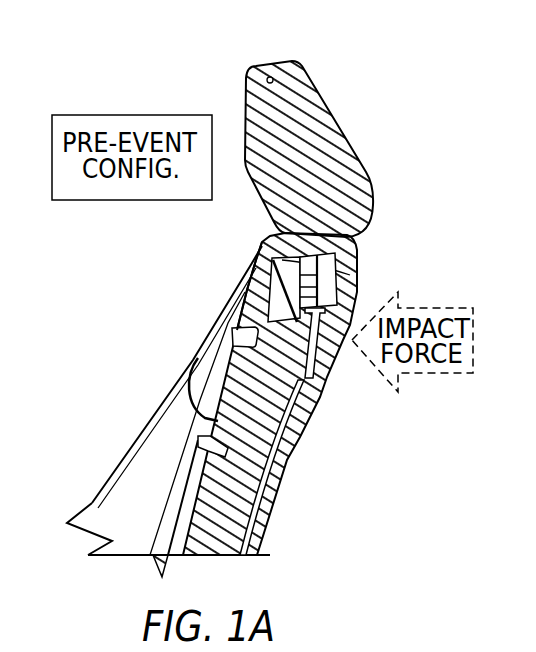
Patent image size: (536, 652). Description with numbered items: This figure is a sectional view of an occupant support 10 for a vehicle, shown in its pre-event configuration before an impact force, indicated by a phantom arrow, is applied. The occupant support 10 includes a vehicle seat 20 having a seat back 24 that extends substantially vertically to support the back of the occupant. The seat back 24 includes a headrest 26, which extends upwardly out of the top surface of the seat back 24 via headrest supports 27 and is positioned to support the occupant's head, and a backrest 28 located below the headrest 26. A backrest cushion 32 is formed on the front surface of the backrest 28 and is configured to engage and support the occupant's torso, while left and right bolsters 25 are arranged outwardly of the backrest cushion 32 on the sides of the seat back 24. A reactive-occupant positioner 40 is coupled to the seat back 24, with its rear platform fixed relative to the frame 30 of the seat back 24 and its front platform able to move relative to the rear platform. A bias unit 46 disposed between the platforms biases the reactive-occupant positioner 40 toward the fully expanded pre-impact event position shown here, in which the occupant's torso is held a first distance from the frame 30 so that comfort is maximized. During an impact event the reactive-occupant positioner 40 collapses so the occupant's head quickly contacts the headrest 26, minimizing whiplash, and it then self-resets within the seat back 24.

The occupant support 10 is at (360, 67).
The vehicle seat 20 is at (385, 207).
The headrest 26 is at (292, 63).
The backrest 28 is at (188, 357).
The reactive-occupant positioner 40 is at (262, 250).
The bias unit 46 is at (353, 278).
The headrest supports 27 is at (335, 363).
The frame 30 is at (292, 410).
The seat back 24 is at (150, 413).
The bolsters 25 is at (142, 441).
The backrest cushion 32 is at (220, 300).